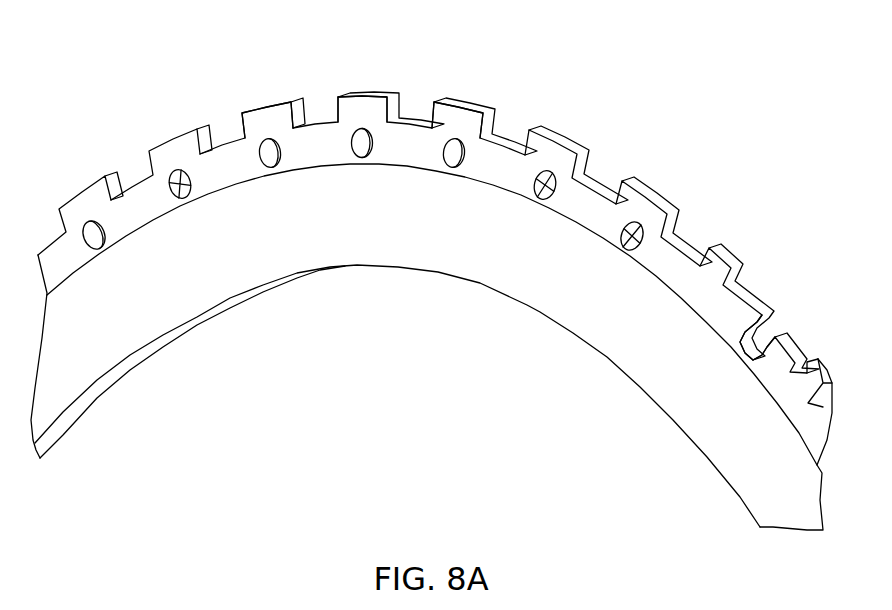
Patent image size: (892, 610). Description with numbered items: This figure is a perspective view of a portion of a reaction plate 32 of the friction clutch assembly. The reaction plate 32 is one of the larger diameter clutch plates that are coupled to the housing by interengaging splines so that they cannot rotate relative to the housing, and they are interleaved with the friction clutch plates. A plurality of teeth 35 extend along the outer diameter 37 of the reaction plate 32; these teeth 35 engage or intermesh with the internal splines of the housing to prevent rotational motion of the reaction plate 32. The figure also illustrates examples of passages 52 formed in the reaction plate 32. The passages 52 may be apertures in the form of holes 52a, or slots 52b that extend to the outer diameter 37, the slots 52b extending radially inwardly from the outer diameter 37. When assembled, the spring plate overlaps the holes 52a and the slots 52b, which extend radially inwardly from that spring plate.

The reaction plate 32 is at (614, 80).
The teeth 35 is at (260, 104).
The outer diameter 37 is at (361, 76).
The passages 52 is at (516, 210).
The holes 52a is at (178, 178).
The slots 52b is at (780, 316).